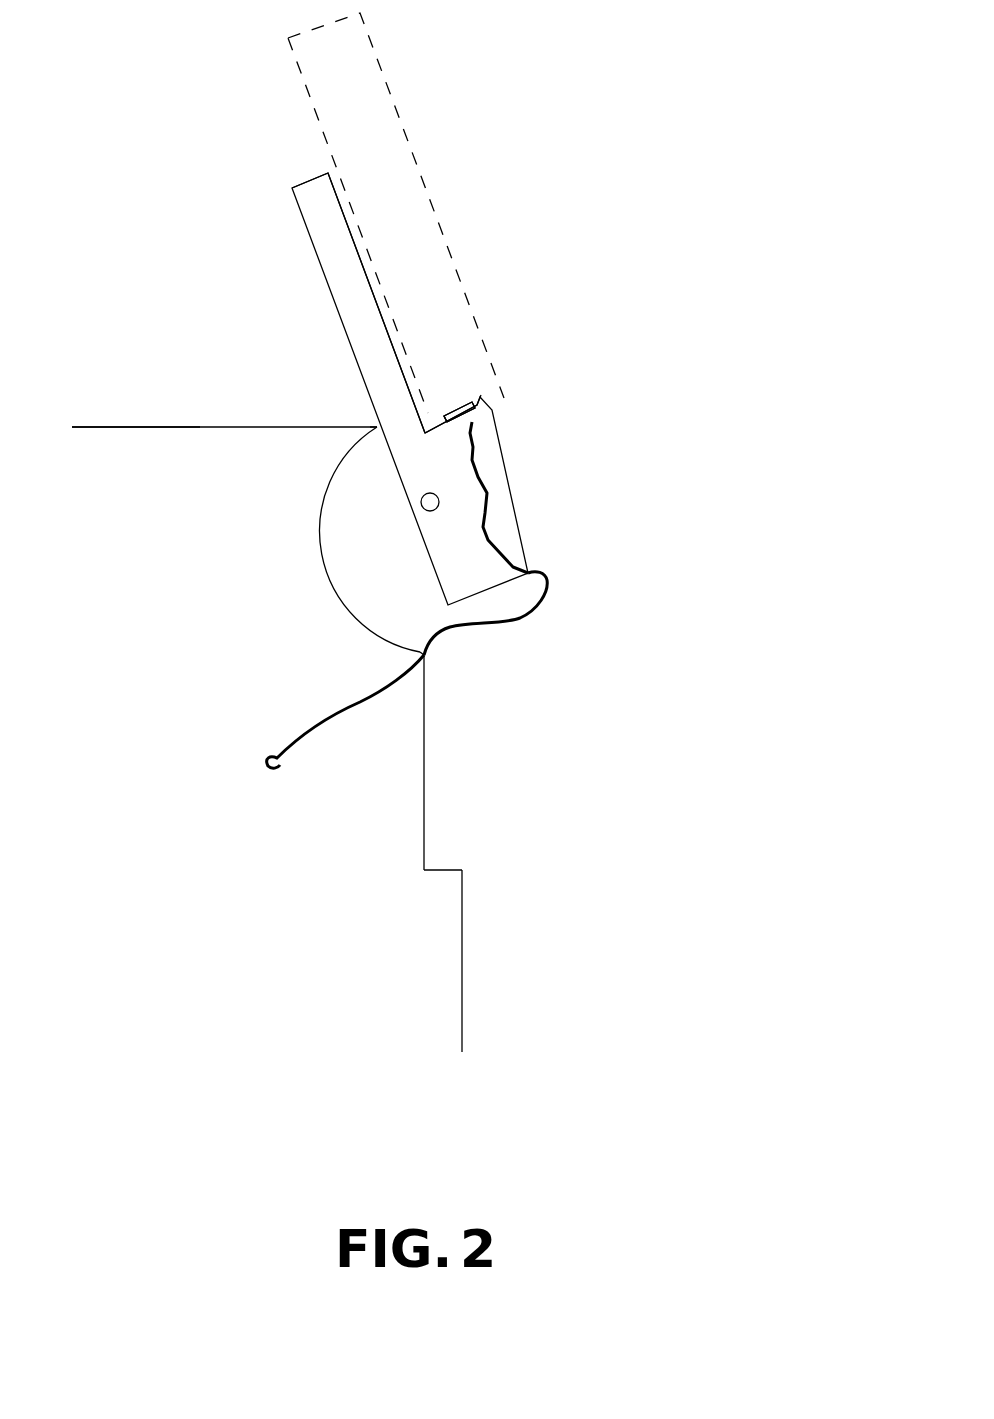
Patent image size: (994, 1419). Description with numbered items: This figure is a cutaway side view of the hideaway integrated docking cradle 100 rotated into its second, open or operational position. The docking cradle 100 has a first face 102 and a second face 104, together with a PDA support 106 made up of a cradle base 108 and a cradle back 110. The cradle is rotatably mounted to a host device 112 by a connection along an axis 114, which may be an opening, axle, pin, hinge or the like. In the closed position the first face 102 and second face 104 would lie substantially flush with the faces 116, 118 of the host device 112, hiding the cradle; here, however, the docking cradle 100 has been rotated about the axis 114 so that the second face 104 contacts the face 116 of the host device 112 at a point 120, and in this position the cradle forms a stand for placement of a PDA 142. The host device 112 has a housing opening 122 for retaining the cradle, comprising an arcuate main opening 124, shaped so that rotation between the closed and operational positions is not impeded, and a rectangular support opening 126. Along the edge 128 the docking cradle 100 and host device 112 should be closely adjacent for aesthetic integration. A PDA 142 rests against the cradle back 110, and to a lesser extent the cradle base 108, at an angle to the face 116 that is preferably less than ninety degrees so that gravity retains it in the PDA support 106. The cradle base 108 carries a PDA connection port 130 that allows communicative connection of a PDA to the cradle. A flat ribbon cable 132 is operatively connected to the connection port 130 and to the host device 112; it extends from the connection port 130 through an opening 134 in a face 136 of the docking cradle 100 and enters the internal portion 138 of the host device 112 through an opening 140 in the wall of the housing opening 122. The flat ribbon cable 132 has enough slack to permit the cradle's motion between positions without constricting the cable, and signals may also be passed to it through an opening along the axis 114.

The hideaway integrated docking cradle 100 is at (762, 363).
The first face 102 is at (455, 604).
The second face 104 is at (312, 283).
The PDA support 106 is at (520, 268).
The cradle base 108 is at (489, 404).
The cradle back 110 is at (367, 275).
The host device 112 is at (110, 427).
The axis 114 is at (430, 493).
The face 116 is at (215, 427).
The face 118 is at (462, 963).
The point 120 is at (378, 427).
The housing opening 122 is at (320, 560).
The main opening 124 is at (320, 510).
The rectangular support opening 126 is at (424, 812).
The edge 128 is at (463, 870).
The PDA connection port 130 is at (463, 408).
The flat ribbon cable 132 is at (332, 717).
The opening 134 is at (530, 573).
The face 136 is at (507, 453).
The internal portion 138 is at (135, 701).
The opening 140 is at (417, 655).
The PDA 142 is at (423, 176).